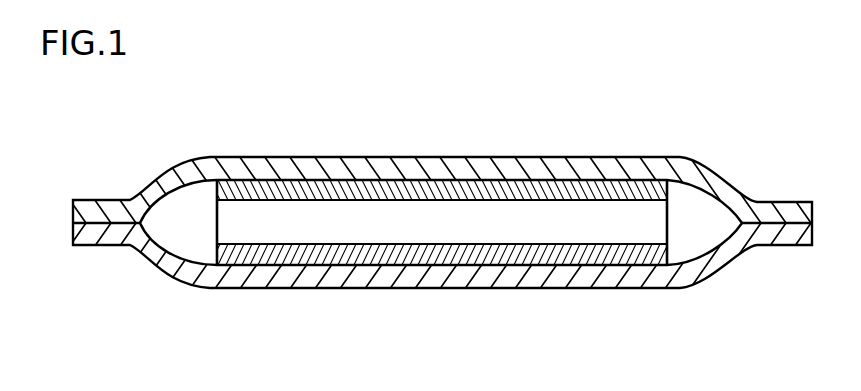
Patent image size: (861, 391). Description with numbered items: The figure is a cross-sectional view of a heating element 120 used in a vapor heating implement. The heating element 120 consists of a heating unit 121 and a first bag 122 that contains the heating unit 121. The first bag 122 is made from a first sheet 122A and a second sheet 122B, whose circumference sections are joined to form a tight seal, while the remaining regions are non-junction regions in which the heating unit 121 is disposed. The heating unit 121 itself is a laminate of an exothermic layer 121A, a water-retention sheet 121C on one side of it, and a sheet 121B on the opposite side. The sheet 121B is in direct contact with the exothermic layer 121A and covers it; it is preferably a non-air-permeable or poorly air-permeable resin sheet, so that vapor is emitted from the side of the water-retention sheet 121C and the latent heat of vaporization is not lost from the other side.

The heating element 120 is at (550, 118).
The heating unit 121 is at (602, 230).
The exothermic layer 121A is at (483, 230).
The sheet 121B is at (402, 262).
The water-retention sheet 121C is at (433, 185).
The first bag 122 is at (433, 221).
The first sheet 122A is at (217, 165).
The second sheet 122B is at (218, 277).